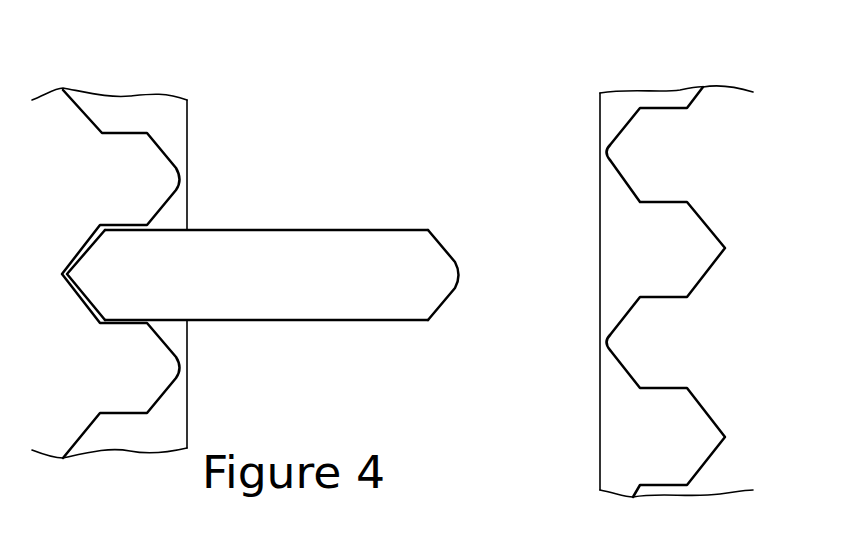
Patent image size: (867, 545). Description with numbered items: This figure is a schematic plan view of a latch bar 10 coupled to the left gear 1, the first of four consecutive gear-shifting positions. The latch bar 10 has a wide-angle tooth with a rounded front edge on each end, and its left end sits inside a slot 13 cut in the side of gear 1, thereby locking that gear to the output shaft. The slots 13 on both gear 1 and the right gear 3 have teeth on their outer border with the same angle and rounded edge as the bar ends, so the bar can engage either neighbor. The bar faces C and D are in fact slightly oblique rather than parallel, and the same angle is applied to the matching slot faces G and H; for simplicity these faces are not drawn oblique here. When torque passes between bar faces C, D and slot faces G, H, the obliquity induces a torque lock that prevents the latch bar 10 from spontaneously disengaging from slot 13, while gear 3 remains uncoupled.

The gear 1 is at (173, 108).
The gear 3 is at (629, 259).
The latch bar 10 is at (263, 277).
The slot 13 is at (620, 435).
The bar face C is at (413, 230).
The bar face D is at (410, 320).
The slot face G is at (648, 202).
The slot face H is at (677, 293).